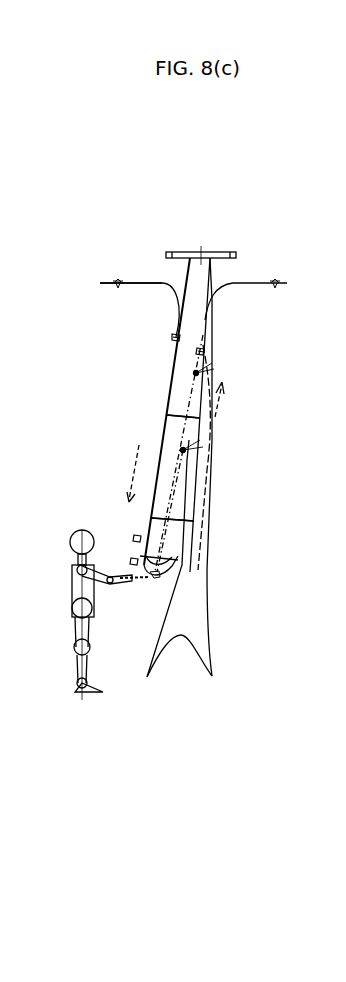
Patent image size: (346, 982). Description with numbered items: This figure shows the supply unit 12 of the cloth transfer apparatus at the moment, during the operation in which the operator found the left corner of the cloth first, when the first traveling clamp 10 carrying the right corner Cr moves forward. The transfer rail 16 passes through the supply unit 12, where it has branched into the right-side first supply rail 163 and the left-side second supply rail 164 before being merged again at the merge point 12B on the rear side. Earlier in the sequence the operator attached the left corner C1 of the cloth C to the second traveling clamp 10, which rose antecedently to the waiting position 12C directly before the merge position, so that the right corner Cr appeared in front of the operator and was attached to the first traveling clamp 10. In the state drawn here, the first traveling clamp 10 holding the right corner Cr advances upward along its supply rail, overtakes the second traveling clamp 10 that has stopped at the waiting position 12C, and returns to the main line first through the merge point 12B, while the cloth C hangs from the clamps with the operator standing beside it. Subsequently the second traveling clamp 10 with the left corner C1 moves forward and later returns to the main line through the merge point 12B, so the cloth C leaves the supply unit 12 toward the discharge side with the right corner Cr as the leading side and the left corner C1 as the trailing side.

The supply unit 12 is at (212, 217).
The traveling clamp 10 is at (170, 338).
The transfer rail 16 is at (133, 283).
The first supply rail 163 is at (163, 439).
The second supply rail 164 is at (173, 519).
The right corner Cr is at (202, 368).
The merge point 12B is at (198, 373).
The waiting position 12C is at (186, 450).
The left corner C1 is at (185, 451).
The cloth C is at (197, 622).